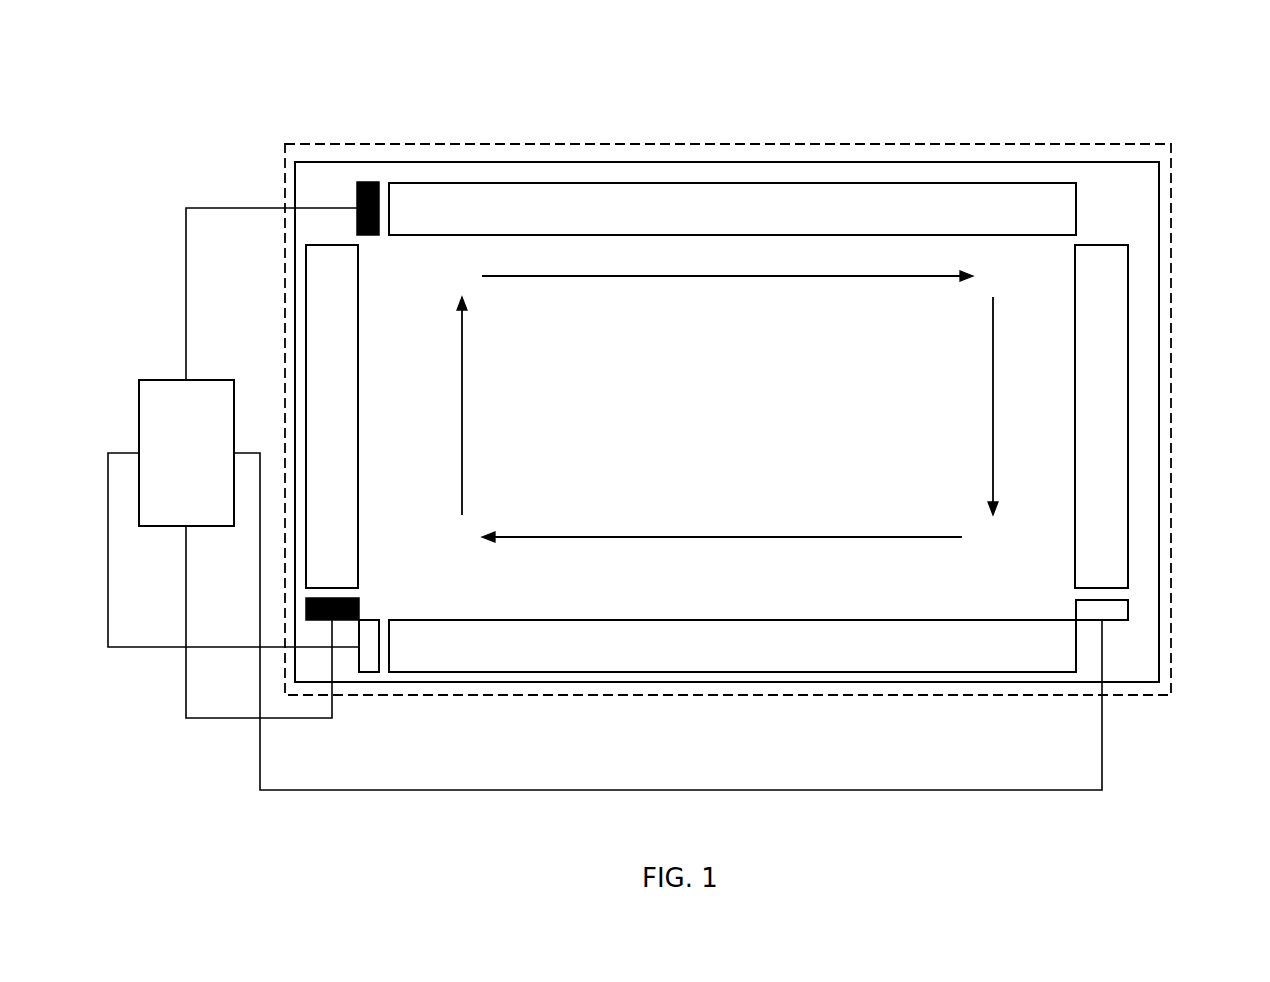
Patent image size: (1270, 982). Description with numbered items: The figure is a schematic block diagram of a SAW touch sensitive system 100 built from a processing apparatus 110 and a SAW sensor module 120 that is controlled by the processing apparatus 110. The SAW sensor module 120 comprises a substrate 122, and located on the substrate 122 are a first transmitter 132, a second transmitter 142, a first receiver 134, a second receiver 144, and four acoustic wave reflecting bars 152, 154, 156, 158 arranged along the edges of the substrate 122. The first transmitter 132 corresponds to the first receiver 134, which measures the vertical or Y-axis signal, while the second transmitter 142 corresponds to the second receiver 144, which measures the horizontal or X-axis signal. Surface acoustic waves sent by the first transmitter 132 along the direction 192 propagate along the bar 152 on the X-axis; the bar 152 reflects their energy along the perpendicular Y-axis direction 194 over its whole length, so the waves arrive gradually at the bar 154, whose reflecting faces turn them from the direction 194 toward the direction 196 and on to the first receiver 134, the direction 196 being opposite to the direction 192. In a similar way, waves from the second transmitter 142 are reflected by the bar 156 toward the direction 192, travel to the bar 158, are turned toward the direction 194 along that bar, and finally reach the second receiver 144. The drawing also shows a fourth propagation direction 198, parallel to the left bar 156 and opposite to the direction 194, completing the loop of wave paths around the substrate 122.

The SAW touch sensitive system 100 is at (257, 145).
The processing apparatus 110 is at (209, 470).
The SAW sensor module 120 is at (1171, 392).
The substrate 122 is at (1140, 211).
The first transmitter 132 is at (377, 182).
The first receiver 134 is at (363, 673).
The second transmitter 142 is at (359, 600).
The second receiver 144 is at (1128, 613).
The acoustic wave reflecting bar 152 is at (759, 222).
The acoustic wave reflecting bar 154 is at (759, 658).
The acoustic wave reflecting bar 156 is at (358, 428).
The acoustic wave reflecting bar 158 is at (1126, 428).
The direction 192 is at (727, 293).
The direction 194 is at (969, 406).
The direction 196 is at (722, 518).
The light propagation direction (left) 198 is at (497, 406).